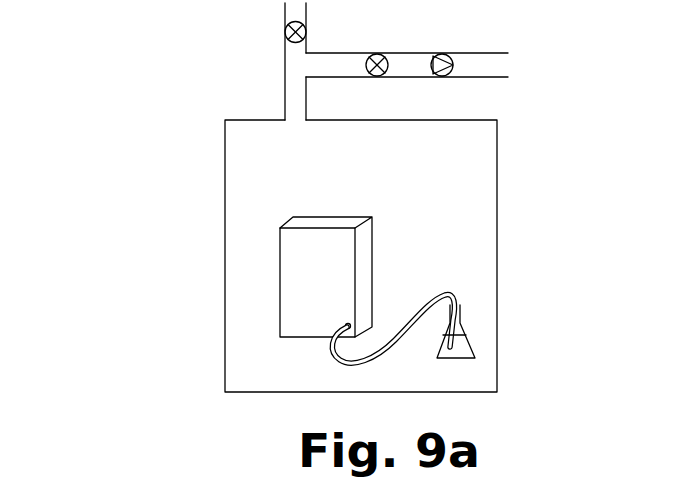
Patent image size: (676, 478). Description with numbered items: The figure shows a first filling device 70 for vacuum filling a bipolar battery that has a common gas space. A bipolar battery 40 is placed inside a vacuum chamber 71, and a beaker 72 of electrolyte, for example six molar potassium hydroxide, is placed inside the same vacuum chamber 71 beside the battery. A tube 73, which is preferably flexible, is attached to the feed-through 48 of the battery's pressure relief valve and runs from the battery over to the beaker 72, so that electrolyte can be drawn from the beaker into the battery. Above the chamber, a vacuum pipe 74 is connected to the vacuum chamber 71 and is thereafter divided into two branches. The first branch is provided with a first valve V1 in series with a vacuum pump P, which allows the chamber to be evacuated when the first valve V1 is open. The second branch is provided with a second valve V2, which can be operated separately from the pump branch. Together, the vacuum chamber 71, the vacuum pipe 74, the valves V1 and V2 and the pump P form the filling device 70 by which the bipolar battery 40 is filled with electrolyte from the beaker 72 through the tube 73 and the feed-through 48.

The first filling device 70 is at (128, 78).
The vacuum chamber 71 is at (482, 187).
The beaker 72 is at (473, 353).
The tube 73 is at (438, 292).
The vacuum pipe 74 is at (293, 102).
The bipolar battery 40 is at (300, 270).
The feed-through 48 is at (349, 325).
The first valve V1 is at (378, 48).
The second valve V2 is at (267, 35).
The vacuum pump P is at (442, 44).